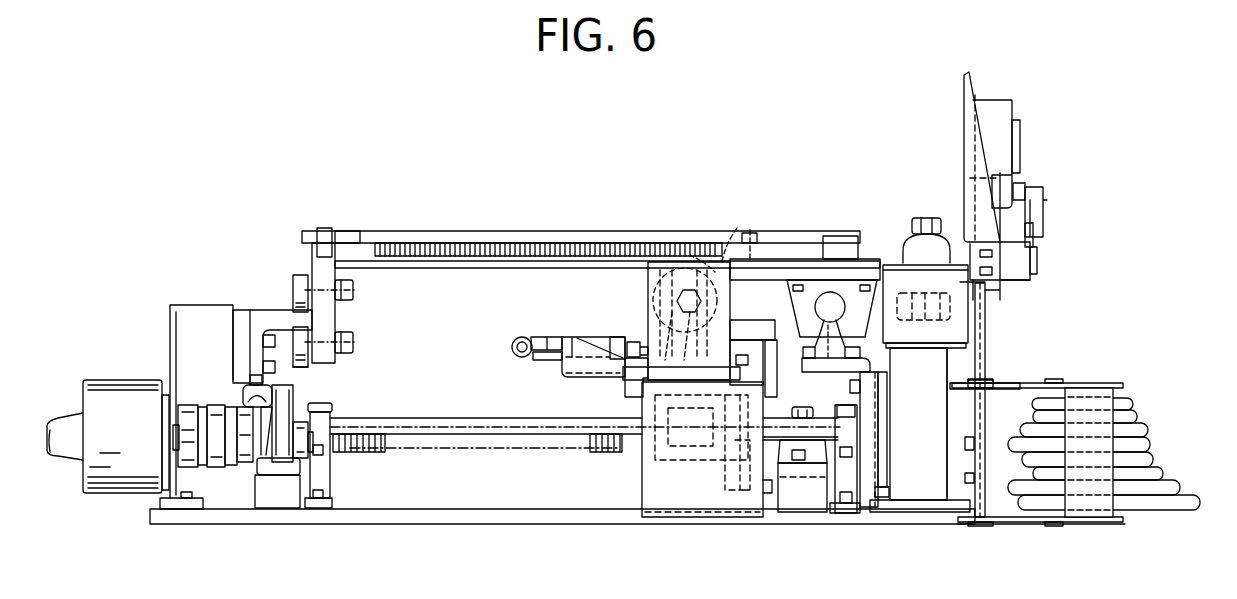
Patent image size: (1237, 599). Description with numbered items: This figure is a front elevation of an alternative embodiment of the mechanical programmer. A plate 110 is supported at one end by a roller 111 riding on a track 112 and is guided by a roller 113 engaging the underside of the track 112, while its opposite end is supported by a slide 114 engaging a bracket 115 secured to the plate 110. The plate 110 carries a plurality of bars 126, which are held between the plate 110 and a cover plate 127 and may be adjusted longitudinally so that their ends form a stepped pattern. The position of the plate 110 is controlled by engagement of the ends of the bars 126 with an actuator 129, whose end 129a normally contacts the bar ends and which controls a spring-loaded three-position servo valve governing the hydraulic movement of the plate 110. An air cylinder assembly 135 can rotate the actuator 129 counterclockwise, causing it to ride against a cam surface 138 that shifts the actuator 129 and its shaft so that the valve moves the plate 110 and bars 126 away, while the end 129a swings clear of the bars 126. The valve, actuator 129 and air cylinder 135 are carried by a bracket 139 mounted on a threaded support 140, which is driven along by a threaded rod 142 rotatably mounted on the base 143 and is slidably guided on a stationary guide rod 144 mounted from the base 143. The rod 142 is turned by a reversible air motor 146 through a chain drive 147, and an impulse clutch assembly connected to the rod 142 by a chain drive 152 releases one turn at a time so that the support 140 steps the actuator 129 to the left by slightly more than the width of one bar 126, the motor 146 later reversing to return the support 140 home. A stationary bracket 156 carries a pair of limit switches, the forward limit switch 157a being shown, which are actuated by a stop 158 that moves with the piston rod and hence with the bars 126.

The plate 110 is at (392, 268).
The roller 111 is at (291, 280).
The track 112 is at (268, 316).
The roller 113 is at (303, 364).
The slide 114 is at (830, 296).
The bracket 115 is at (788, 300).
The bars 126 is at (505, 245).
The cover plate 127 is at (425, 232).
The actuator 129 is at (722, 236).
The end of actuator 129a is at (695, 268).
The air cylinder assembly 135 is at (597, 336).
The cam surface 138 is at (766, 305).
The bracket 139 is at (648, 290).
The threaded support 140 is at (643, 482).
The threaded rod 142 is at (362, 452).
The base 143 is at (398, 509).
The guide rod 144 is at (402, 418).
The air motor 146 is at (112, 380).
The chain drive 147 is at (207, 405).
The chain drive 152 is at (231, 405).
The stationary bracket 156 is at (965, 130).
The forward limit switch 157a is at (1007, 110).
The stop 158 is at (1040, 262).